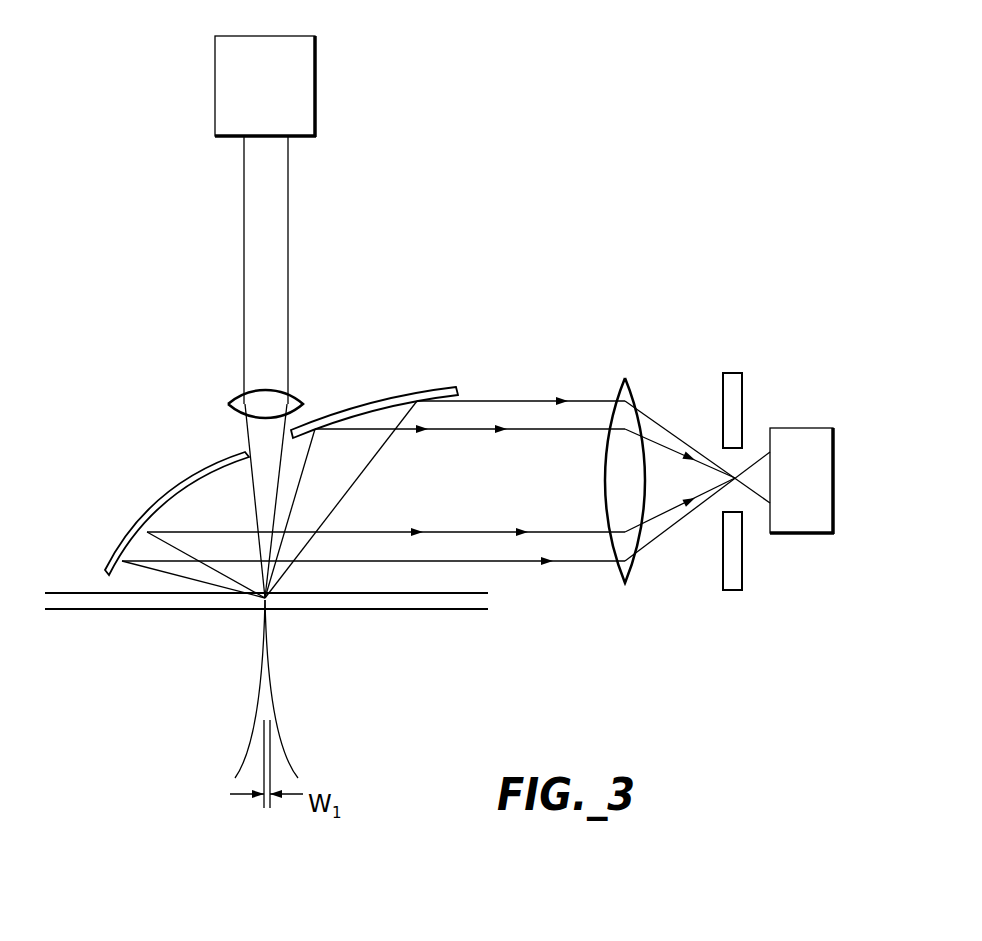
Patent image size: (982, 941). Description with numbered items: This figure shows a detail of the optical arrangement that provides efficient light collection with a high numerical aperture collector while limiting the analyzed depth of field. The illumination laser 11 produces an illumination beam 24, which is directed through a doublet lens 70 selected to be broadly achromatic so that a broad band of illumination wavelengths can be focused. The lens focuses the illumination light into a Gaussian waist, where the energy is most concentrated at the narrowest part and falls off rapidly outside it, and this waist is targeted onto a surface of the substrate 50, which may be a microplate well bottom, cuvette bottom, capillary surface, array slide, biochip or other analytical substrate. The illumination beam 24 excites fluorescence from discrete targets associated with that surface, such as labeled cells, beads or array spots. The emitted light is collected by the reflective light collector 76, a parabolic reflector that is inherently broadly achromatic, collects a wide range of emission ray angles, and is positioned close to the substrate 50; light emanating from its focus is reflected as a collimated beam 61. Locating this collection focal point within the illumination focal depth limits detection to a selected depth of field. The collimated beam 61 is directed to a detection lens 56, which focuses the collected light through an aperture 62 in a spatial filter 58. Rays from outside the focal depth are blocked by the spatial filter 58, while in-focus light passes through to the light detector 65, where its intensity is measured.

The illumination laser 11 is at (316, 94).
The illumination beam 24 is at (257, 284).
The doublet lens 70 is at (238, 393).
The light collector 76 is at (410, 394).
The substrate 50 is at (196, 604).
The collimated beam 61 is at (503, 558).
The detection lens 56 is at (640, 573).
The spatial filter 58 is at (733, 590).
The aperture 62 is at (744, 457).
The light detector 65 is at (780, 533).